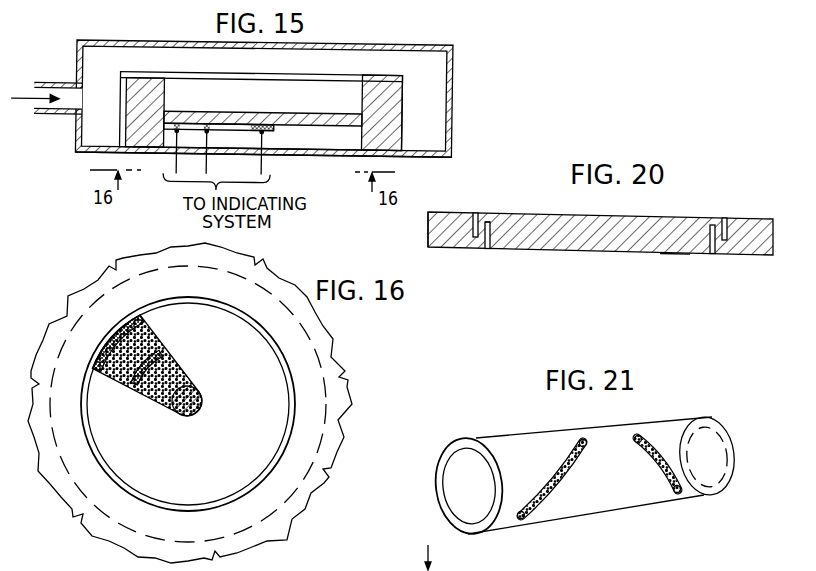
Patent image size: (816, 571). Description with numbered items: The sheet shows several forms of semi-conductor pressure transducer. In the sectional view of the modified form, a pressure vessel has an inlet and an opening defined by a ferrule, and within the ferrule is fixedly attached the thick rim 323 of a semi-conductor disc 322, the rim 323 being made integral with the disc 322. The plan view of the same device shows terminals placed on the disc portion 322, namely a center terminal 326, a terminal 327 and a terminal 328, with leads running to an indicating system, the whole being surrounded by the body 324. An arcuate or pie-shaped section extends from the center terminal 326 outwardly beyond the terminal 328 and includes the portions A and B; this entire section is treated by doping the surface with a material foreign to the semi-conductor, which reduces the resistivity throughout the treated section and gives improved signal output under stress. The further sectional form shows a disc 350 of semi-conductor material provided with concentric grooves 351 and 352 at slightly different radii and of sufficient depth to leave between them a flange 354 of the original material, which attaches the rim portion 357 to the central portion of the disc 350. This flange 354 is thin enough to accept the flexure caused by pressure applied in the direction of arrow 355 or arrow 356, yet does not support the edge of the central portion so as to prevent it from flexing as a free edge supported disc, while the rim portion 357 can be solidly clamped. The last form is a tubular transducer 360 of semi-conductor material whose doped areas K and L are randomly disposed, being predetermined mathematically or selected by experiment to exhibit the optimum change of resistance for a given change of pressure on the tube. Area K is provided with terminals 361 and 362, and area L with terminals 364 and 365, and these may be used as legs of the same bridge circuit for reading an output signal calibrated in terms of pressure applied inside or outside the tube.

In FIG. 16, the semi-conductor disc 322 is at (263, 366).
In FIG. 16, the thick rim 323 is at (285, 377).
In FIG. 16, the housing bottom wall / surrounding body 324 is at (332, 429).
In FIG. 16, the center terminal 326 is at (203, 399).
In FIG. 16, the terminal 327 is at (158, 349).
In FIG. 16, the terminal 328 is at (138, 321).
In FIG. 20, the disc 350 is at (548, 215).
In FIG. 20, the concentric groove 351 is at (474, 213).
In FIG. 20, the concentric groove 352 is at (487, 250).
In FIG. 20, the flange 354 is at (487, 226).
In FIG. 20, the arrow 355 is at (672, 196).
In FIG. 20, the arrow 356 is at (672, 256).
In FIG. 20, the rim portion 357 is at (431, 224).
In FIG. 21, the tubular transducer 360 is at (546, 432).
In FIG. 21, the terminal 361 is at (641, 437).
In FIG. 21, the terminal 362 is at (680, 494).
In FIG. 21, the terminal 364 is at (583, 440).
In FIG. 21, the terminal 365 is at (519, 521).
In FIG. 16, the portion of arcuate section A is at (162, 407).
In FIG. 16, the portion of arcuate section B is at (125, 378).
In FIG. 21, the doped area K is at (660, 466).
In FIG. 21, the doped area L is at (546, 473).